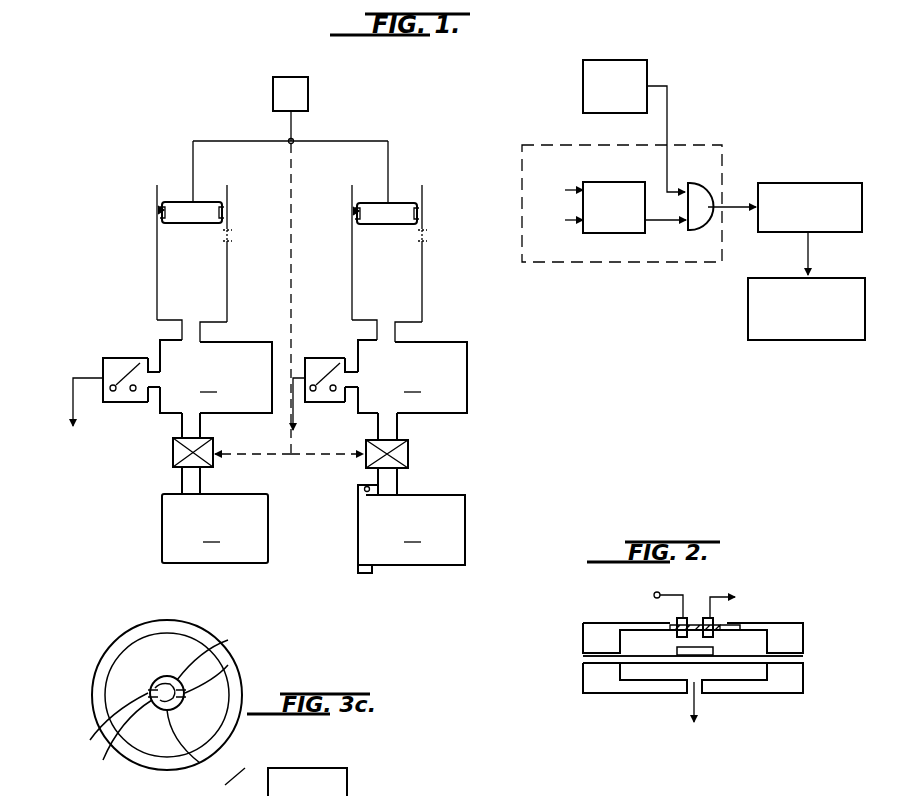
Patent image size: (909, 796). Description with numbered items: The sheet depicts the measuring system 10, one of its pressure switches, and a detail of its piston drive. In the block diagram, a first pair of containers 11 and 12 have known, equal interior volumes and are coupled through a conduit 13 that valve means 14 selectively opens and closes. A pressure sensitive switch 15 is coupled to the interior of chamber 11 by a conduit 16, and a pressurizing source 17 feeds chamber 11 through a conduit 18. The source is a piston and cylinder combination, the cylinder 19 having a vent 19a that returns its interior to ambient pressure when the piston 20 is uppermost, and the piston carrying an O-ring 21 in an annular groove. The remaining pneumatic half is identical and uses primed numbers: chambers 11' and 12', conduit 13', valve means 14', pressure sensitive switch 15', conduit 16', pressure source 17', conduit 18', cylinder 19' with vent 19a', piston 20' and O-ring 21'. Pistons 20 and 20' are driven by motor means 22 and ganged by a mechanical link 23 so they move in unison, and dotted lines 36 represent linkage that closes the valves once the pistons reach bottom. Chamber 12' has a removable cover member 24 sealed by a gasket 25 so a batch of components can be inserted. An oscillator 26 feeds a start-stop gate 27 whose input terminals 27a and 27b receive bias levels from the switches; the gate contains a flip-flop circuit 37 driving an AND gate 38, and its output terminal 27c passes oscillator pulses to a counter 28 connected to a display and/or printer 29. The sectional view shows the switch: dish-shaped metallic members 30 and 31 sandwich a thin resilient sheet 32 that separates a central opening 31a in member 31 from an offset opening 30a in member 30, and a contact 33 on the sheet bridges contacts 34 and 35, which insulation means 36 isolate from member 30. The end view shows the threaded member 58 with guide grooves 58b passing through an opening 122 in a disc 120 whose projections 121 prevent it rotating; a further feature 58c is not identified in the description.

In FIG. 1, the system 10 is at (102, 92).
In FIG. 1, the container 11 is at (226, 376).
In FIG. 1, the container 11' is at (438, 376).
In FIG. 1, the container 12 is at (190, 515).
In FIG. 1, the container 12' is at (435, 516).
In FIG. 1, the conduit 13 is at (219, 428).
In FIG. 1, the conduit 13' is at (421, 428).
In FIG. 1, the valve means 14 is at (168, 455).
In FIG. 1, the valve means 14' is at (410, 454).
In FIG. 1, the pressure sensitive switch 15 is at (91, 388).
In FIG. 2, the pressure sensitive switch 15 is at (717, 650).
In FIG. 1, the pressure sensitive switch 15' is at (325, 388).
In FIG. 1, the conduit 16 is at (147, 349).
In FIG. 1, the conduit 16' is at (346, 348).
In FIG. 1, the pressurizing source 17 is at (122, 252).
In FIG. 1, the pressure source 17' is at (325, 252).
In FIG. 1, the conduit 18 is at (210, 329).
In FIG. 1, the conduit 18' is at (409, 329).
In FIG. 1, the cylinder 19 is at (242, 253).
In FIG. 1, the cylinder 19' is at (444, 253).
In FIG. 1, the vent 19a is at (243, 242).
In FIG. 1, the vent 19a' is at (440, 242).
In FIG. 1, the piston 20 is at (187, 187).
In FIG. 1, the piston 20' is at (396, 186).
In FIG. 1, the O-ring 21 is at (136, 215).
In FIG. 1, the O-ring 21' is at (333, 216).
In FIG. 1, the motor means 22 is at (310, 96).
In FIG. 3C, the motor means 22 is at (348, 792).
In FIG. 1, the mechanical link 23 is at (238, 128).
In FIG. 1, the cover member 24 is at (357, 530).
In FIG. 1, the gasket 25 is at (374, 571).
In FIG. 1, the oscillator 26 is at (582, 86).
In FIG. 1, the start-stop gate 27 is at (700, 146).
In FIG. 1, the input terminal 27a is at (557, 191).
In FIG. 1, the input terminal 27b is at (557, 220).
In FIG. 1, the output terminal 27c is at (663, 228).
In FIG. 1, the counter 28 is at (820, 162).
In FIG. 1, the display and/or printer 29 is at (797, 341).
In FIG. 2, the dish-shaped metallic member 30 is at (582, 632).
In FIG. 2, the offset opening 30a is at (744, 632).
In FIG. 2, the dish-shaped metallic member 31 is at (603, 694).
In FIG. 2, the centrally located opening 31a is at (687, 690).
In FIG. 2, the resilient sheet 32 is at (728, 666).
In FIG. 2, the contact 33 is at (676, 650).
In FIG. 2, the contact 34 is at (676, 622).
In FIG. 2, the contact 35 is at (713, 620).
In FIG. 1, the insulation means 36 is at (288, 165).
In FIG. 2, the insulation means 36 is at (698, 618).
In FIG. 1, the bistable flip-flop circuit 37 is at (620, 226).
In FIG. 1, the AND gate 38 is at (712, 172).
In FIG. 3C, the elongated threaded member 58 is at (228, 640).
In FIG. 3C, the longitudinal guide groove 58b is at (200, 763).
In FIG. 3C, the spoke 58c is at (222, 782).
In FIG. 3C, the disc 120 is at (178, 657).
In FIG. 3C, the projection 121 is at (228, 665).
In FIG. 3C, the opening 122 is at (150, 682).